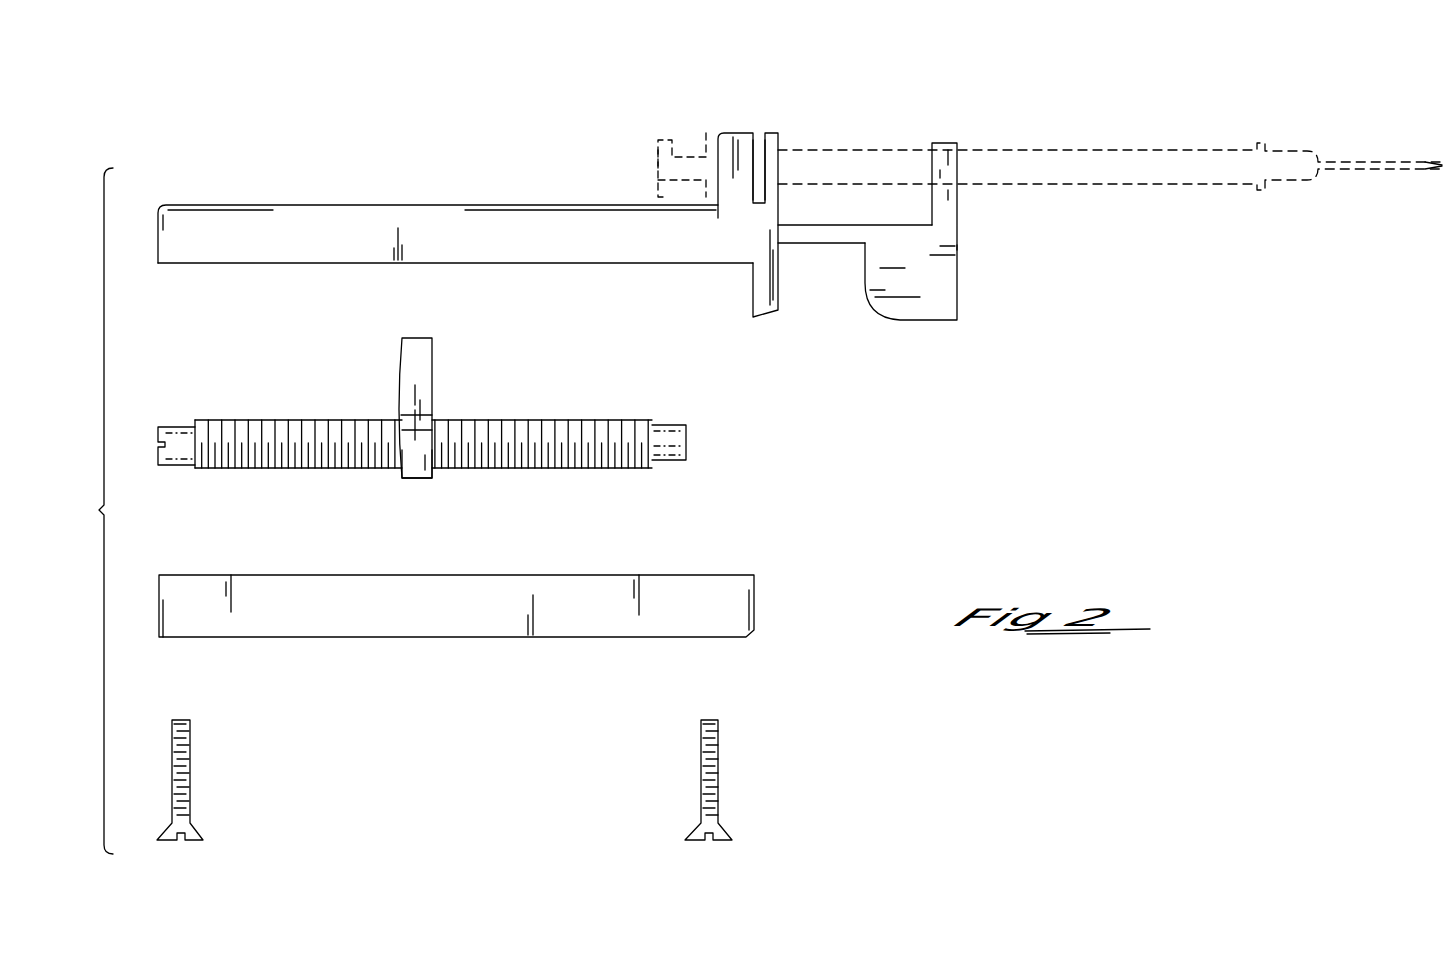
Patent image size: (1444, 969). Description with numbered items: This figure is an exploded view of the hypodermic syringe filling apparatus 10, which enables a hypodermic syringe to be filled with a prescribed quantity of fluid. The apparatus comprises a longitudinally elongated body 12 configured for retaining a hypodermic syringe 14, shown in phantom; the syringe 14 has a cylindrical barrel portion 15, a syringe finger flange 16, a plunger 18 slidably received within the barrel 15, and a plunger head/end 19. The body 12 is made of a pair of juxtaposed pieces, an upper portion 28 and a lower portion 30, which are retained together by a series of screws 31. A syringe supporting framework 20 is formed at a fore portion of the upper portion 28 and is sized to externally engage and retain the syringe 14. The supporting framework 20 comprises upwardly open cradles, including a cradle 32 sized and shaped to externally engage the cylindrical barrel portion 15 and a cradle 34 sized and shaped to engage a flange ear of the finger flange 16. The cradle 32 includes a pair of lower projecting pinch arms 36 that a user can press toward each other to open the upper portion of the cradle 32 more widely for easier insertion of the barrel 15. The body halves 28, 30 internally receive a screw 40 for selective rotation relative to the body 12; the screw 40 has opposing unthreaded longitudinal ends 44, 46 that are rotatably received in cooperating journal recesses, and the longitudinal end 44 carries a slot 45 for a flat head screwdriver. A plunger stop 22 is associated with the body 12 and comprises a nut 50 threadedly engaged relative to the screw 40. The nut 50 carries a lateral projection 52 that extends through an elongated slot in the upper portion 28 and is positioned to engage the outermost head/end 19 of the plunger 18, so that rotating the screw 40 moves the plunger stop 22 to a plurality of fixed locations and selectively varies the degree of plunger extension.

The hypodermic syringe filling apparatus 10 is at (800, 174).
The longitudinally elongated body 12 is at (598, 194).
The hypodermic syringe 14 is at (1092, 147).
The cylindrical barrel portion 15 is at (1160, 167).
The syringe finger flange 16 is at (713, 130).
The plunger 18 is at (686, 167).
The plunger head/end 19 is at (656, 157).
The syringe supporting framework 20 is at (908, 202).
The plunger stop 22 is at (468, 422).
The upper portion 28 is at (313, 233).
The lower portion 30 is at (428, 606).
The screws 31 is at (190, 758).
The cradle 32 is at (947, 143).
The cradle 34 is at (770, 143).
The pinch arms 36 is at (932, 272).
The screw 40 is at (575, 430).
The longitudinal end 44 is at (164, 422).
The slot 45 is at (158, 443).
The longitudinal end 46 is at (683, 405).
The nut 50 is at (412, 480).
The lateral projection 52 is at (418, 367).